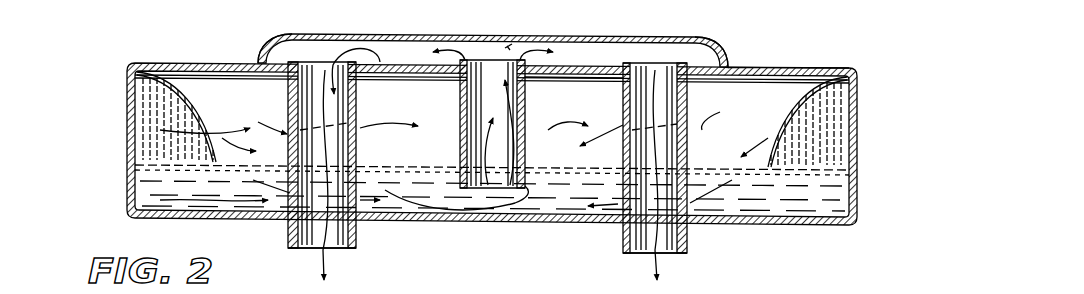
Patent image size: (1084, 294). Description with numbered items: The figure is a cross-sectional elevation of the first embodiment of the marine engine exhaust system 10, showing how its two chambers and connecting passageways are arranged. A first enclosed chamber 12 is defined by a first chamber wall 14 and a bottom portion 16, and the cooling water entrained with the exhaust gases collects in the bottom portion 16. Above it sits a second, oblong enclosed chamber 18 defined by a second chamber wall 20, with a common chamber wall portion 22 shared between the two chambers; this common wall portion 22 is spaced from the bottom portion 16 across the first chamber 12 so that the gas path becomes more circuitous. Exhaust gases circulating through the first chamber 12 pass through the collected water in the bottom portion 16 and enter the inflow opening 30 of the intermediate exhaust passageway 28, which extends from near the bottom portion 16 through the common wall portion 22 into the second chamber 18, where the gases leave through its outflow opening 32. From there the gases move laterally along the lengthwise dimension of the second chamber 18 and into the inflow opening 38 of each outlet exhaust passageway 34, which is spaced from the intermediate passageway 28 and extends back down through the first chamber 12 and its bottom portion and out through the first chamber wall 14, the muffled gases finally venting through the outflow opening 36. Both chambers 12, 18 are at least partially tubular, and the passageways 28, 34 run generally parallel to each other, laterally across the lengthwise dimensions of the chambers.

The marine engine exhaust system 10 is at (177, 52).
The first enclosed chamber 12 is at (752, 108).
The first chamber wall 14 is at (833, 52).
The bottom portion 16 is at (786, 225).
The second oblong enclosed chamber 18 is at (528, 43).
The second chamber wall 20 is at (497, 45).
The common chamber wall portion 22 is at (279, 82).
The intermediate exhaust passageway 28 is at (511, 127).
The inflow opening of the intermediate exhaust passageway 30 is at (527, 191).
The outflow opening of the intermediate exhaust passageway 32 is at (547, 86).
The outlet exhaust passageway 34 is at (356, 140).
The outflow opening of the outlet exhaust passageway 36 is at (358, 238).
The inflow opening of the outlet exhaust passageway 38 is at (268, 58).